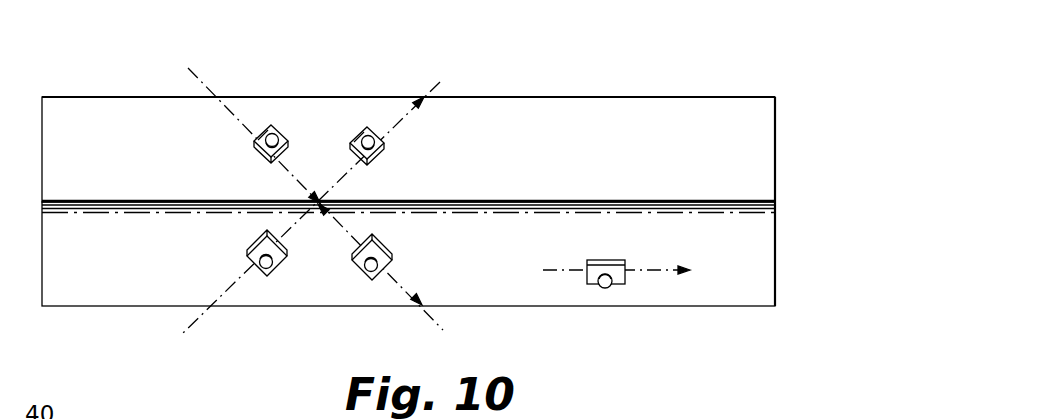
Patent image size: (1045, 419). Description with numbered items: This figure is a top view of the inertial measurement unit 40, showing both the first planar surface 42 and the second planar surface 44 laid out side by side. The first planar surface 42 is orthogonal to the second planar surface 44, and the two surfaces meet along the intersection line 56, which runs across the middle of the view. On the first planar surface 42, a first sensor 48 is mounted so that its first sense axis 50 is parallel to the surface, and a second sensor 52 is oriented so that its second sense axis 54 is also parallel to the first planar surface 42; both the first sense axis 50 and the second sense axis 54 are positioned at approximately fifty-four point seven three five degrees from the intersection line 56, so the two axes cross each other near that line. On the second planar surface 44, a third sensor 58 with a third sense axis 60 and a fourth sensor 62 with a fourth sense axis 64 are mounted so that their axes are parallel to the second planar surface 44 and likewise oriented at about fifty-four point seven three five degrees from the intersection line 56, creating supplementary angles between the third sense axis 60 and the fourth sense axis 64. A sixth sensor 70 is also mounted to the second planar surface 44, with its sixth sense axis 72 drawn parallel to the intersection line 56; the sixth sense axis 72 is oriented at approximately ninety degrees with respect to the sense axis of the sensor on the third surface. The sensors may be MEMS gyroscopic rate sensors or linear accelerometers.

The inertial measurement unit 40 is at (90, 58).
The first planar surface 42 is at (703, 110).
The second planar surface 44 is at (718, 293).
The first sensor 48 is at (250, 149).
The first sense axis 50 is at (236, 118).
The second sensor 52 is at (388, 150).
The second sense axis 54 is at (388, 132).
The intersection line 56 is at (689, 200).
The third sensor 58 is at (248, 257).
The third sense axis 60 is at (205, 310).
The fourth sensor 62 is at (392, 258).
The fourth sense axis 64 is at (395, 279).
The sixth sensor 70 is at (587, 262).
The sixth sense axis 72 is at (656, 268).